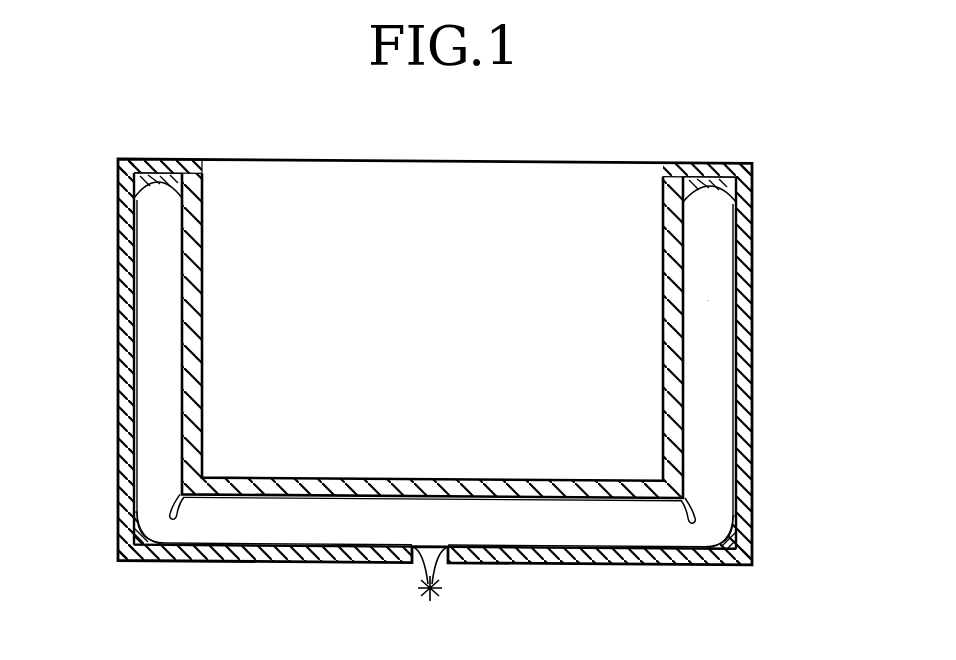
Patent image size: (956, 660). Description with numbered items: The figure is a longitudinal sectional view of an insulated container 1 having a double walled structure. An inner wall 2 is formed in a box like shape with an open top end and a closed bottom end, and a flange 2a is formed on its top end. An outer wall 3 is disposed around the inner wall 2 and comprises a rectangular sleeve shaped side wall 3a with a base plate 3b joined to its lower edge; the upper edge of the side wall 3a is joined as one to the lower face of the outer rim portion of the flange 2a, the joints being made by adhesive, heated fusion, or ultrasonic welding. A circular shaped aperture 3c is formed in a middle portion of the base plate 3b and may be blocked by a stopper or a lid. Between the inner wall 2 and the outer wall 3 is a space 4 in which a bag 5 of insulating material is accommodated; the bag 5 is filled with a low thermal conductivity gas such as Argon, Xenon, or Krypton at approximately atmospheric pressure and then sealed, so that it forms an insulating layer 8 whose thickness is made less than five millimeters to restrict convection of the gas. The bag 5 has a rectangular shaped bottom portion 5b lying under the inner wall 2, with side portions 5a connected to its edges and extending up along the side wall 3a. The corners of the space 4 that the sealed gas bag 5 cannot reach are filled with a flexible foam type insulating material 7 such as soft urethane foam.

The insulated container 1 is at (764, 226).
The inner wall 2 is at (663, 278).
The flange 2a is at (168, 163).
The outer wall 3 is at (755, 310).
The side wall 3a is at (741, 371).
The base plate 3b is at (580, 556).
The aperture 3c is at (444, 550).
The space 4 is at (690, 390).
The bag 5 is at (740, 524).
The side portions 5a is at (737, 413).
The bottom portion 5b is at (298, 497).
The flexible foam type insulating material 7 is at (204, 186).
The insulating layer 8 is at (538, 527).